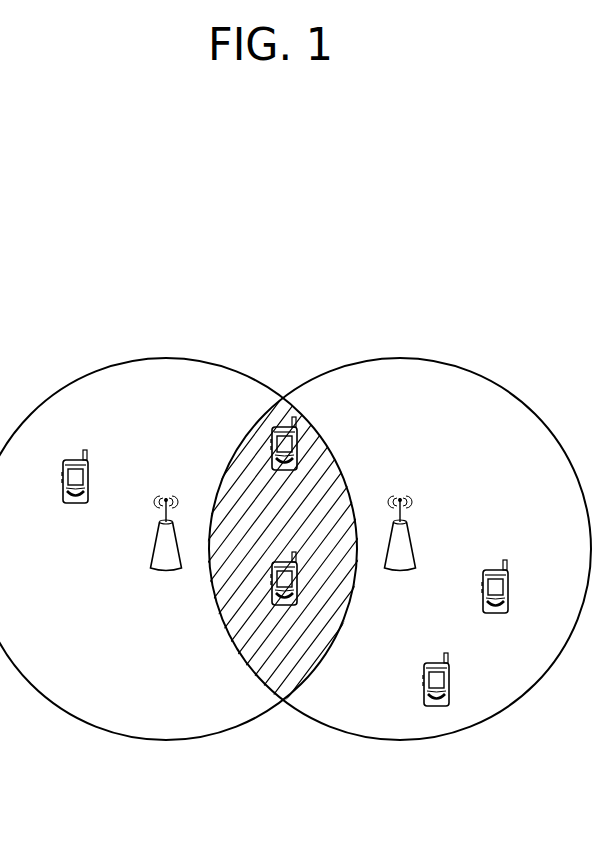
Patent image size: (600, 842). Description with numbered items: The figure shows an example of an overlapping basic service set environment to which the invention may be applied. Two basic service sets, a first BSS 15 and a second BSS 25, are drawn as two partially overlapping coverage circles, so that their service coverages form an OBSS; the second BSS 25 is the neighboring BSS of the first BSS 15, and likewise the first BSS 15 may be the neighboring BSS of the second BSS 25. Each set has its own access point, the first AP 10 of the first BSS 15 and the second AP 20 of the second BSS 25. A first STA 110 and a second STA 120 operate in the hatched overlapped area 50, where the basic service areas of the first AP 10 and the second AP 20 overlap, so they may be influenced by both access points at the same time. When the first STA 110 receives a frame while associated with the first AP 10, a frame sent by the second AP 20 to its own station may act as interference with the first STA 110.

The AP 1 10 is at (169, 565).
The BSS 1 15 is at (178, 549).
The AP 2 20 is at (403, 565).
The BSS 2 25 is at (400, 549).
The overlapped area 50 is at (284, 686).
The STA 1 110 is at (286, 474).
The STA 2 120 is at (286, 610).